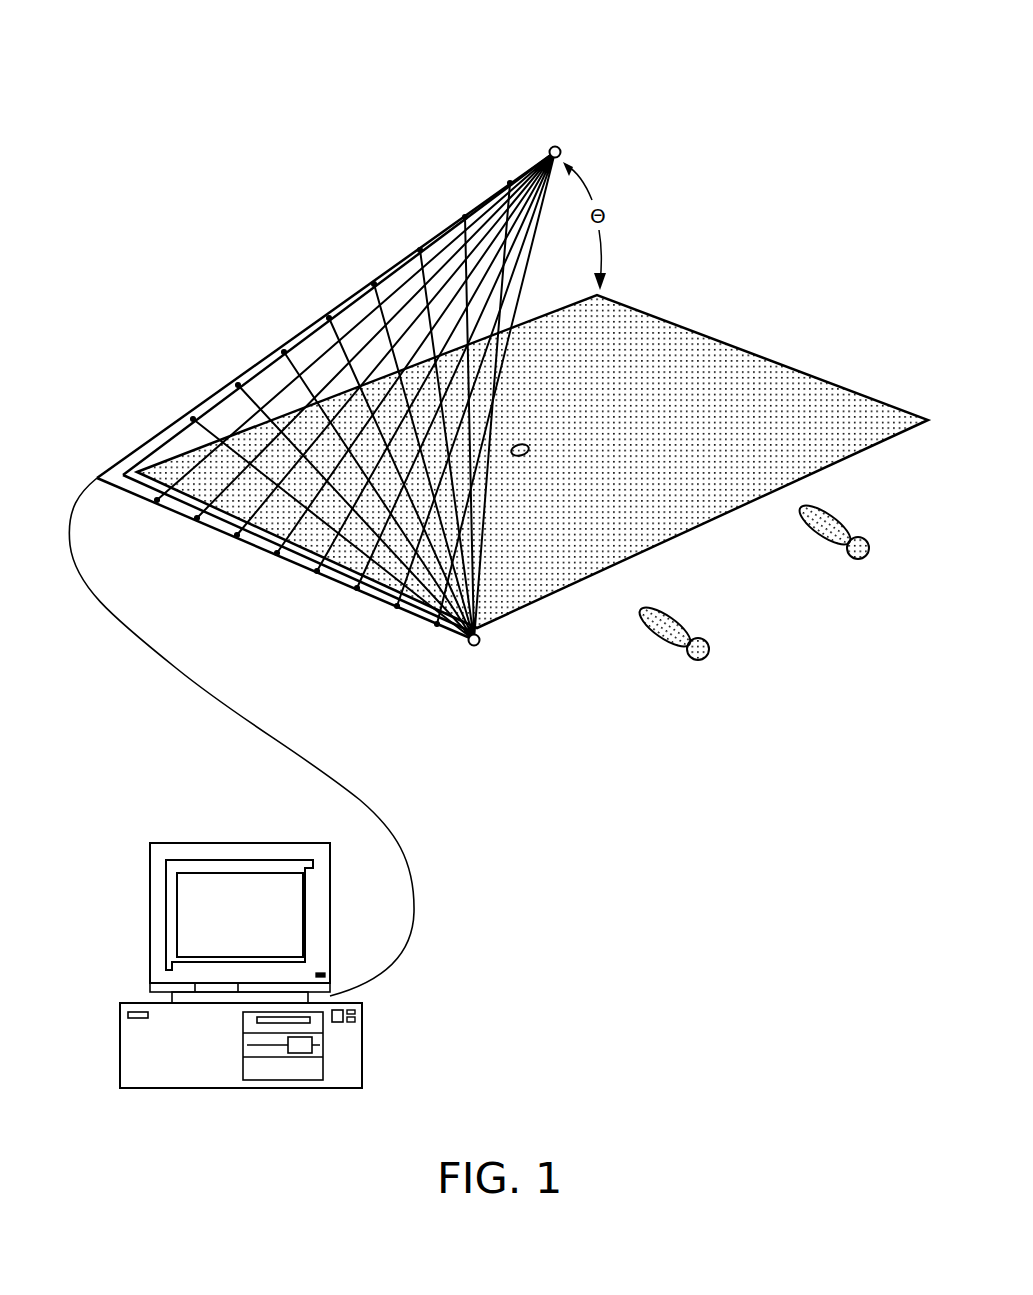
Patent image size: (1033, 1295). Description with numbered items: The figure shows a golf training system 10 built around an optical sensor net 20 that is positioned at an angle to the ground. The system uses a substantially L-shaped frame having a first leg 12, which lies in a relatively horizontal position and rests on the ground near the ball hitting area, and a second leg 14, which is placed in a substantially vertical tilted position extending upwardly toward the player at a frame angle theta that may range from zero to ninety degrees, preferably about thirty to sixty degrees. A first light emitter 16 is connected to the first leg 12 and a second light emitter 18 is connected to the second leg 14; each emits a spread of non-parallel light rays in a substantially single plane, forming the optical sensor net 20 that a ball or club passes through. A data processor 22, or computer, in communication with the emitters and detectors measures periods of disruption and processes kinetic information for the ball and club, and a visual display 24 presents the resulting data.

The golf training system 10 is at (523, 107).
The first leg 12 is at (382, 598).
The second leg 14 is at (207, 403).
The first light emitter 16 is at (476, 646).
The second light emitter 18 is at (556, 146).
The optical sensor net 20 is at (300, 340).
The data processor 22 is at (325, 984).
The visual display 24 is at (252, 921).